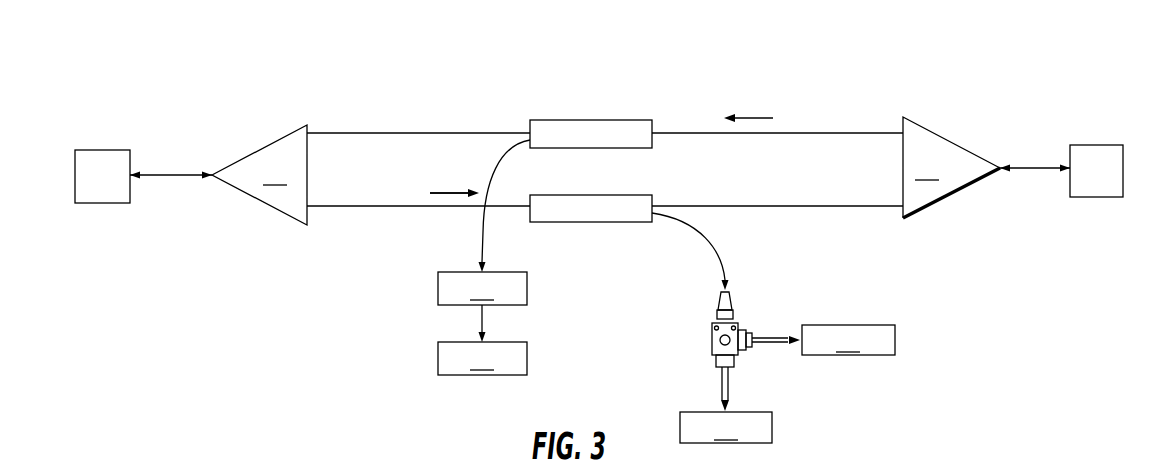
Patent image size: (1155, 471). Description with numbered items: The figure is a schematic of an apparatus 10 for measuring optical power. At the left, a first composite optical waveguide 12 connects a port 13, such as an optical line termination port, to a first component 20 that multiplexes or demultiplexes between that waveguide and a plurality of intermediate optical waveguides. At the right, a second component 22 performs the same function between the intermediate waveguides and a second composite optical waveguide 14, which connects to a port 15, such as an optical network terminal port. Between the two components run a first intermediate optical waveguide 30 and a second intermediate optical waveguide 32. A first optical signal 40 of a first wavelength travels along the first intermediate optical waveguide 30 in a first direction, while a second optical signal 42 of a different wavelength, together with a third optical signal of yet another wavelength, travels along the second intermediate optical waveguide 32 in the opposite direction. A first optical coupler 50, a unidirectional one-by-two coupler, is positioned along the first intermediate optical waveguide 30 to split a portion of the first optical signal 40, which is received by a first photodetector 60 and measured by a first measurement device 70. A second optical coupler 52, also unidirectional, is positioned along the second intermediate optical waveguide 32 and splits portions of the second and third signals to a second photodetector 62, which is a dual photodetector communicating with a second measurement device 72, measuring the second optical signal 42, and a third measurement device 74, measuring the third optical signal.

The apparatus 10 is at (860, 71).
The first composite optical waveguide 12 is at (165, 173).
The port 13 is at (115, 150).
The second composite optical waveguide 14 is at (1025, 167).
The port 15 is at (1090, 145).
The first component 20 is at (259, 175).
The second component 22 is at (951, 167).
The first intermediate optical waveguide 30 is at (357, 133).
The second intermediate optical waveguide 32 is at (803, 206).
The first optical signal 40 is at (757, 118).
The second optical signal 42 is at (466, 188).
The first optical coupler 50 is at (597, 120).
The second optical coupler 52 is at (602, 195).
The first photodetector 60 is at (482, 307).
The second photodetector 62 is at (750, 308).
The first measurement device 70 is at (482, 358).
The second measurement device 72 is at (823, 340).
The third measurement device 74 is at (726, 405).